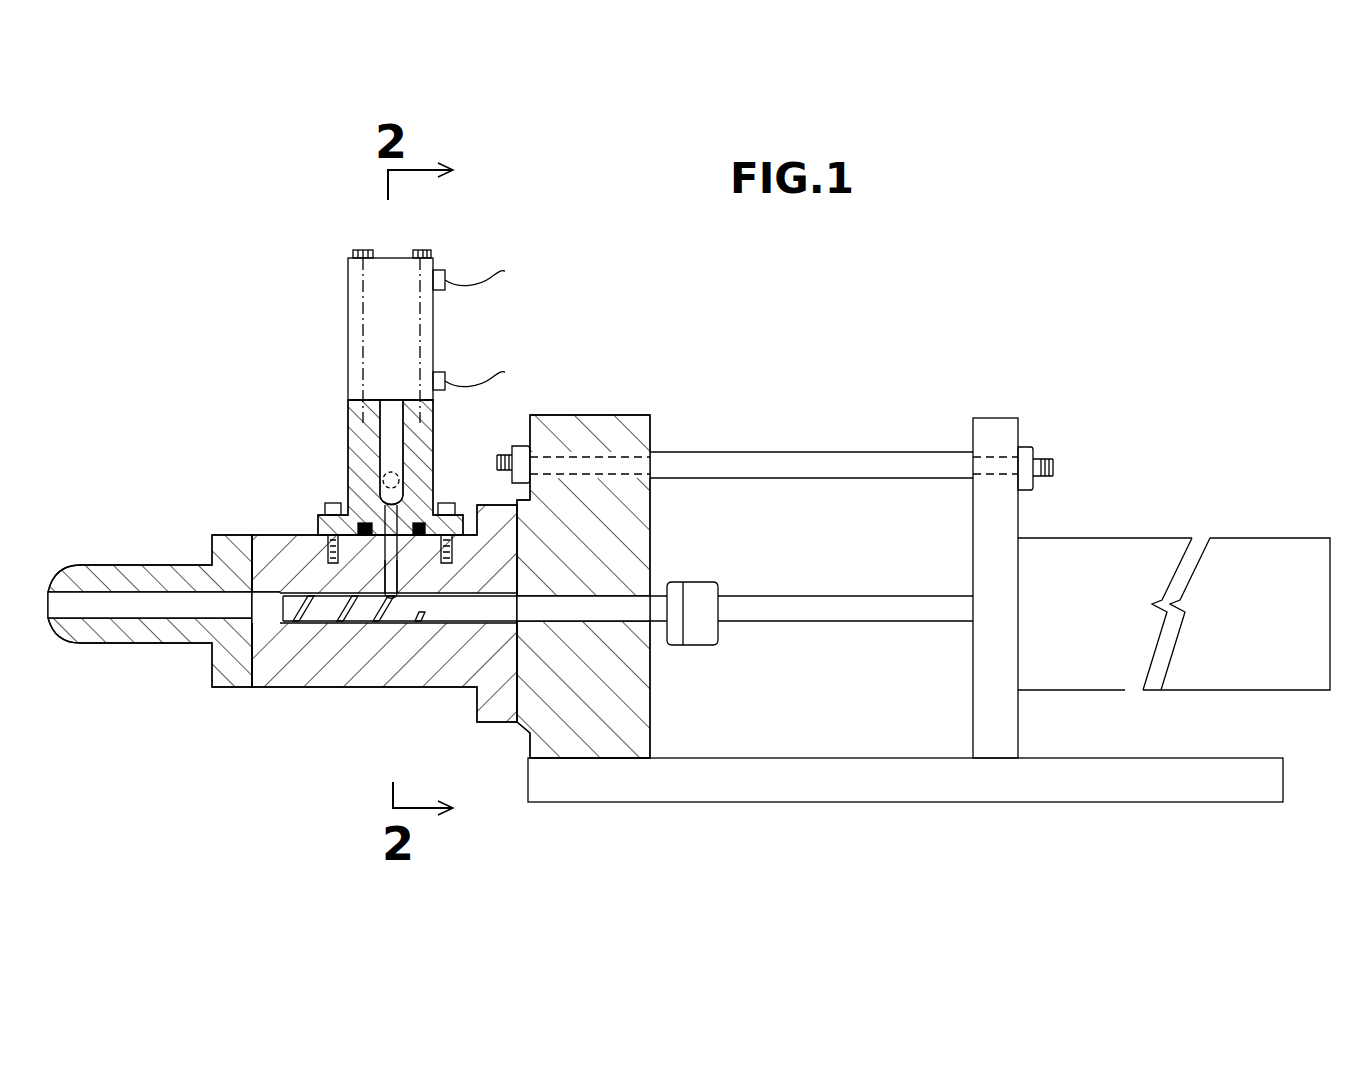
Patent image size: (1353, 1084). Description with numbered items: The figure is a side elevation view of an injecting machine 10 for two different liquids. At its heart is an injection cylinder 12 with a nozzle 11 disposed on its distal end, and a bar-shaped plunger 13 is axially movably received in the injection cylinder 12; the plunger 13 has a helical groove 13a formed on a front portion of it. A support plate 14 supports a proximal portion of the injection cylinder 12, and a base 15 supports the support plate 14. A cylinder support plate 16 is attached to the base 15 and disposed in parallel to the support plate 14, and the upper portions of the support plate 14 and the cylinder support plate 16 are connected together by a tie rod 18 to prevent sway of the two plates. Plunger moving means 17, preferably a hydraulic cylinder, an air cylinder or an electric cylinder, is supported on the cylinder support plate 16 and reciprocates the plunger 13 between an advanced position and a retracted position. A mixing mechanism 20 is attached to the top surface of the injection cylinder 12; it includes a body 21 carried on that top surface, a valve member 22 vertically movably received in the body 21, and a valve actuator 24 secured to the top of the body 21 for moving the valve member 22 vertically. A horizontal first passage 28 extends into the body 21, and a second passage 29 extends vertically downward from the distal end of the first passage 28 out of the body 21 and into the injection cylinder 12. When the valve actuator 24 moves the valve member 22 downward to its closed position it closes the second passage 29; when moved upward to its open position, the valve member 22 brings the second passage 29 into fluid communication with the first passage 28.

The injecting machine 10 is at (210, 298).
The nozzle 11 is at (135, 633).
The injection cylinder 12 is at (363, 688).
The plunger 13 is at (587, 607).
The helical groove 13a is at (315, 622).
The support plate 14 is at (596, 420).
The base 15 is at (772, 782).
The cylinder support plate 16 is at (990, 425).
The plunger moving means 17 is at (1125, 550).
The tie rod 18 is at (790, 453).
The mixing mechanism 20 is at (474, 243).
The body 21 is at (358, 425).
The valve member 22 is at (390, 450).
The valve actuator 24 is at (355, 333).
The first passage 28 is at (384, 483).
The second passage 29 is at (393, 553).